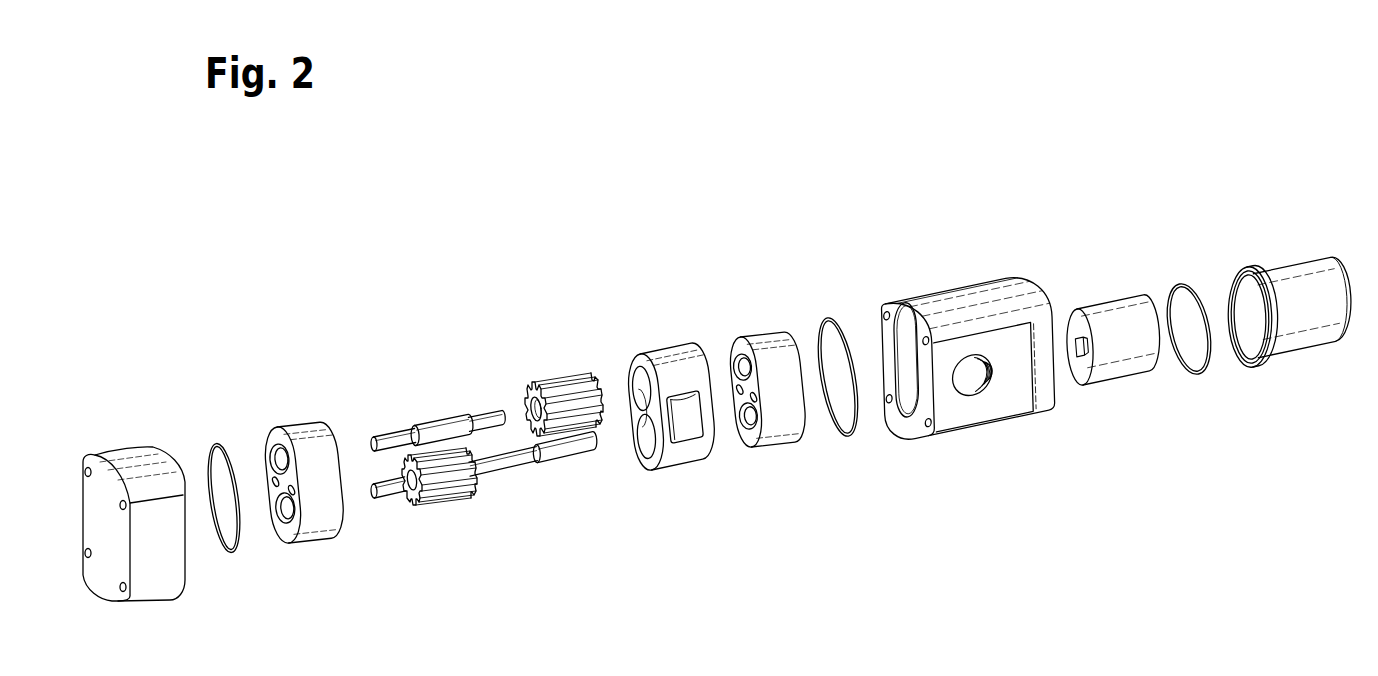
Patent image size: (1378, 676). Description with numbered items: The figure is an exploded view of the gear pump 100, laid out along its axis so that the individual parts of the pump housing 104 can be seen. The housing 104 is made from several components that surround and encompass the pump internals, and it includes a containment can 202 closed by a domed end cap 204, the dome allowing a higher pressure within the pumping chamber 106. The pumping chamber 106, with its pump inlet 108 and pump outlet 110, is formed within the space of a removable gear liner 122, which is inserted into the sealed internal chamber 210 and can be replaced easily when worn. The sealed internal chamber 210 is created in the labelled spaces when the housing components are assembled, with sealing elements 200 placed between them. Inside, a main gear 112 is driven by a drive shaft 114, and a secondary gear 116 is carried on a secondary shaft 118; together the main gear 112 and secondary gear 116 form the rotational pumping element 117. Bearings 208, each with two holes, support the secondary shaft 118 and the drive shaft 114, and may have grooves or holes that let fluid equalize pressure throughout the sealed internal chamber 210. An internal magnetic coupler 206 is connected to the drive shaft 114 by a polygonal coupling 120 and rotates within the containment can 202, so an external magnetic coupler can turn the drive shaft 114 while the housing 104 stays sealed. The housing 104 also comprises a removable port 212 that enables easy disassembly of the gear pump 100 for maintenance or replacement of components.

The gear pump 100 is at (1053, 213).
The pump housing 104 is at (145, 585).
The pumping chamber 106 is at (644, 372).
The pump inlet 108 is at (982, 393).
The pump outlet 110 is at (906, 412).
The main gear 112 is at (450, 500).
The drive shaft 114 is at (504, 473).
The secondary gear 116 is at (558, 381).
The rotational pumping element 117 is at (627, 548).
The secondary shaft 118 is at (385, 432).
The polygonal coupling 120 is at (441, 406).
The gear liner 122 is at (676, 462).
The sealing element 200 is at (230, 555).
The containment can 202 is at (1308, 342).
The end cap 204 is at (1353, 284).
The internal magnetic coupler 206 is at (1135, 373).
The bearing 208 is at (315, 525).
The sealed internal chamber 210 is at (901, 336).
The removable port 212 is at (130, 447).